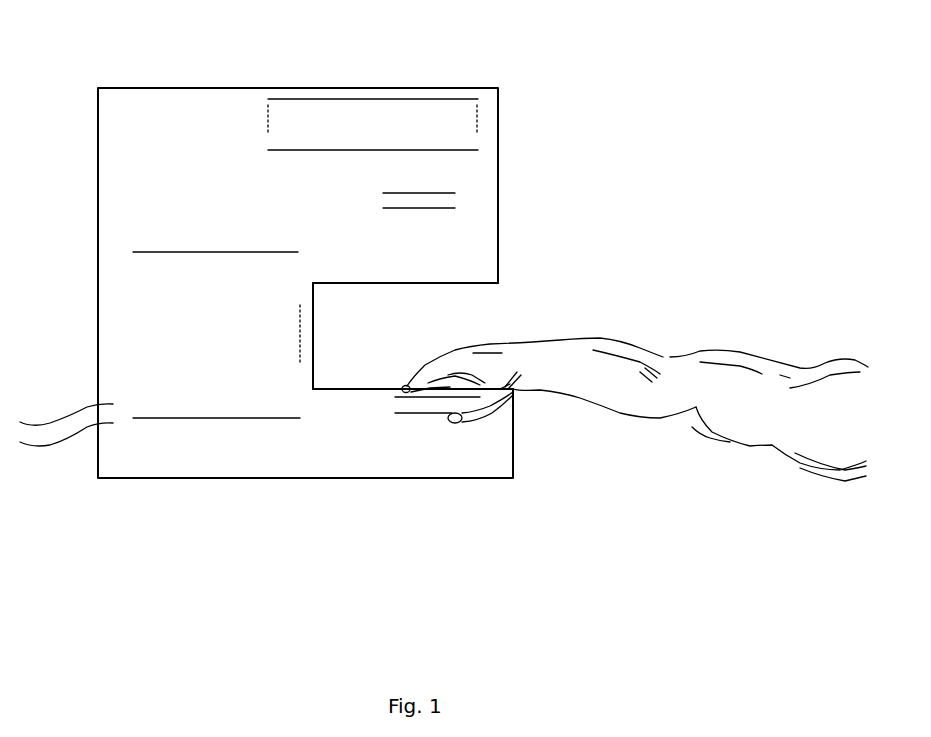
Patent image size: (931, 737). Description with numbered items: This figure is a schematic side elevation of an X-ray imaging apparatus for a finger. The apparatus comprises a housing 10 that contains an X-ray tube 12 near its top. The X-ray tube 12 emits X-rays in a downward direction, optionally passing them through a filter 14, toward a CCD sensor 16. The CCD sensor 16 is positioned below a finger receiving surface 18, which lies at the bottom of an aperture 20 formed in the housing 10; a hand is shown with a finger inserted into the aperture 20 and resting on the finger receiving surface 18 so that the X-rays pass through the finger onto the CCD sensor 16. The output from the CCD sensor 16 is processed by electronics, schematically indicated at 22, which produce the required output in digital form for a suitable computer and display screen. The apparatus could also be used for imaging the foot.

The housing 10 is at (493, 148).
The X-ray tube 12 is at (313, 107).
The filter 14 is at (450, 195).
The CCD sensor 16 is at (422, 417).
The finger receiving surface 18 is at (377, 385).
The aperture 20 is at (450, 312).
The electronics 22 is at (207, 330).